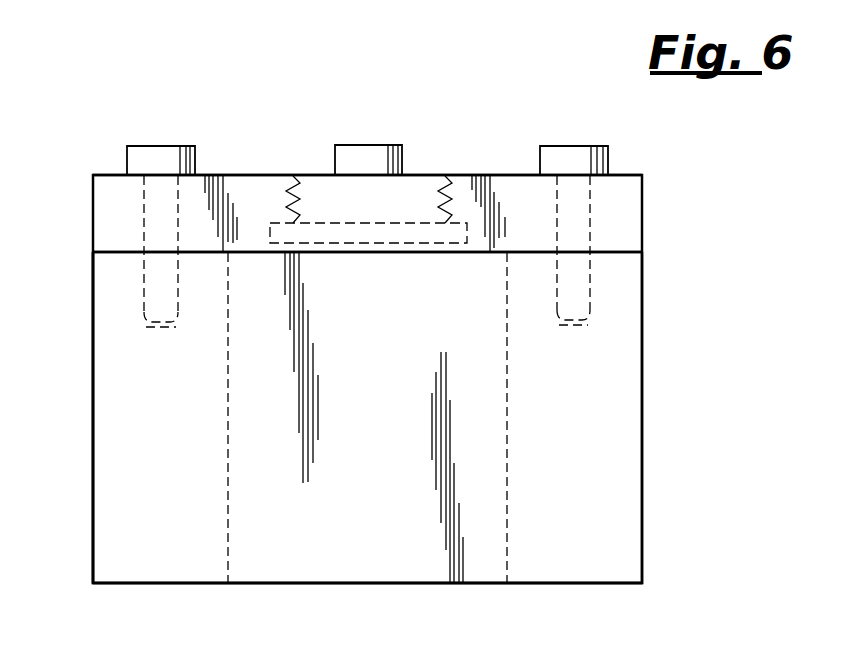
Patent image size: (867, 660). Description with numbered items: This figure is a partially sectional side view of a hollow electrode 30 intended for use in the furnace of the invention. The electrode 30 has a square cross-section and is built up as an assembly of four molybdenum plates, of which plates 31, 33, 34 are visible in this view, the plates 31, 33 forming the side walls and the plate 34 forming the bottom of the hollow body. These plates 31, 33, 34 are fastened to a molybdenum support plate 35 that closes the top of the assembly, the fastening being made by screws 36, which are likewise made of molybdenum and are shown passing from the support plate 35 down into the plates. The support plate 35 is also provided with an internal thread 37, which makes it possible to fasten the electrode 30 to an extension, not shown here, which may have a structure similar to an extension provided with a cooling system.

The hollow electrode 30 is at (186, 110).
The molybdenum plate 31 is at (135, 421).
The molybdenum plate 33 is at (605, 393).
The molybdenum plate 34 is at (360, 563).
The molybdenum support plate 35 is at (630, 218).
The screws 36 is at (150, 155).
The internal thread 37 is at (301, 174).